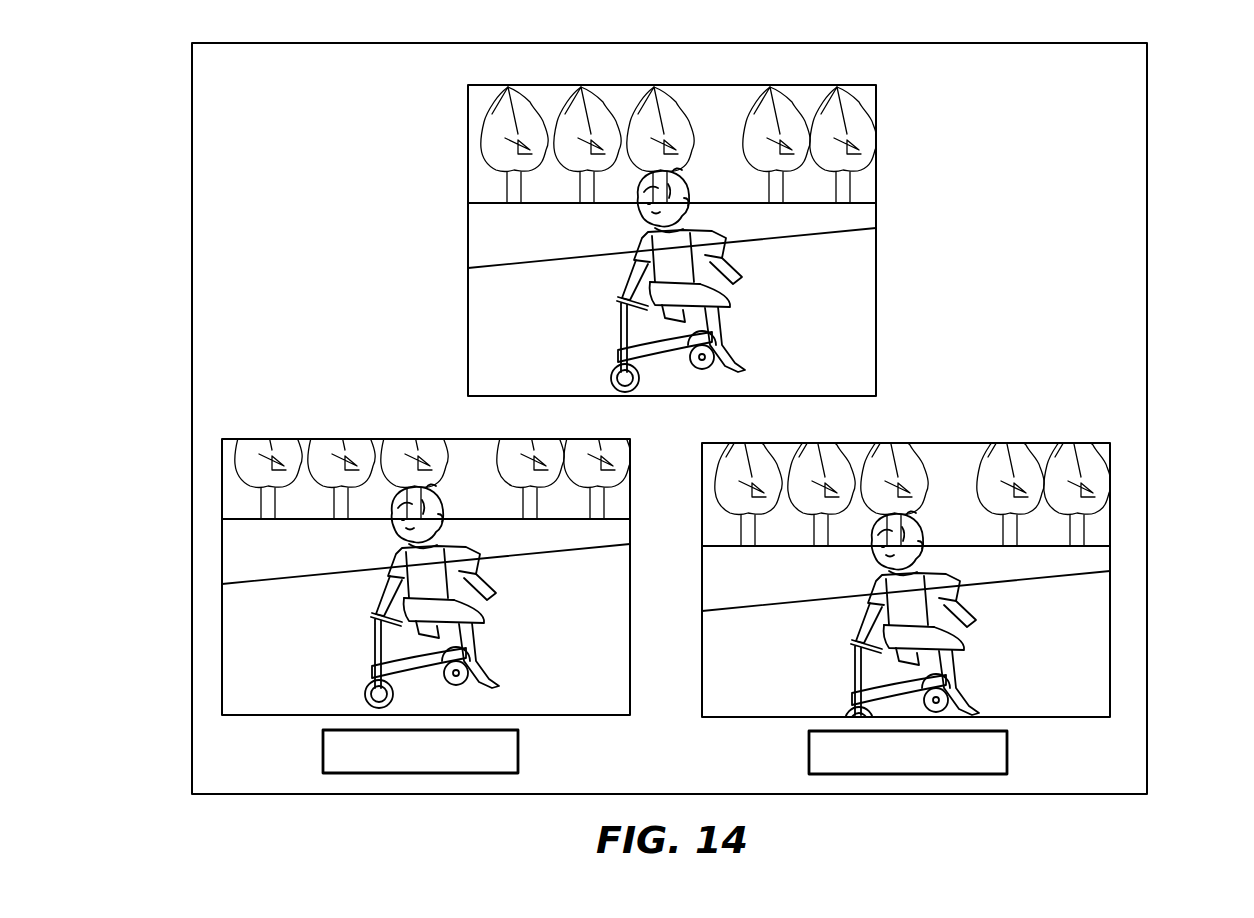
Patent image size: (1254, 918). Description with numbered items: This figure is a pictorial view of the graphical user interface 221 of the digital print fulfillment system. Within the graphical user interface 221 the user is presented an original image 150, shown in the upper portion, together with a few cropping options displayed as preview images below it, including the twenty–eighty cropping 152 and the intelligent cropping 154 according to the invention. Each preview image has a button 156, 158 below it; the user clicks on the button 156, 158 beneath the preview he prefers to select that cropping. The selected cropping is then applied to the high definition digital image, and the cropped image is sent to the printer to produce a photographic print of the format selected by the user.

The graphical user interface 221 is at (1148, 172).
The original image 150 is at (876, 295).
The intelligent cropping 154 is at (630, 478).
The "20–80" cropping 152 is at (700, 600).
The button 156 is at (518, 749).
The button 158 is at (808, 755).